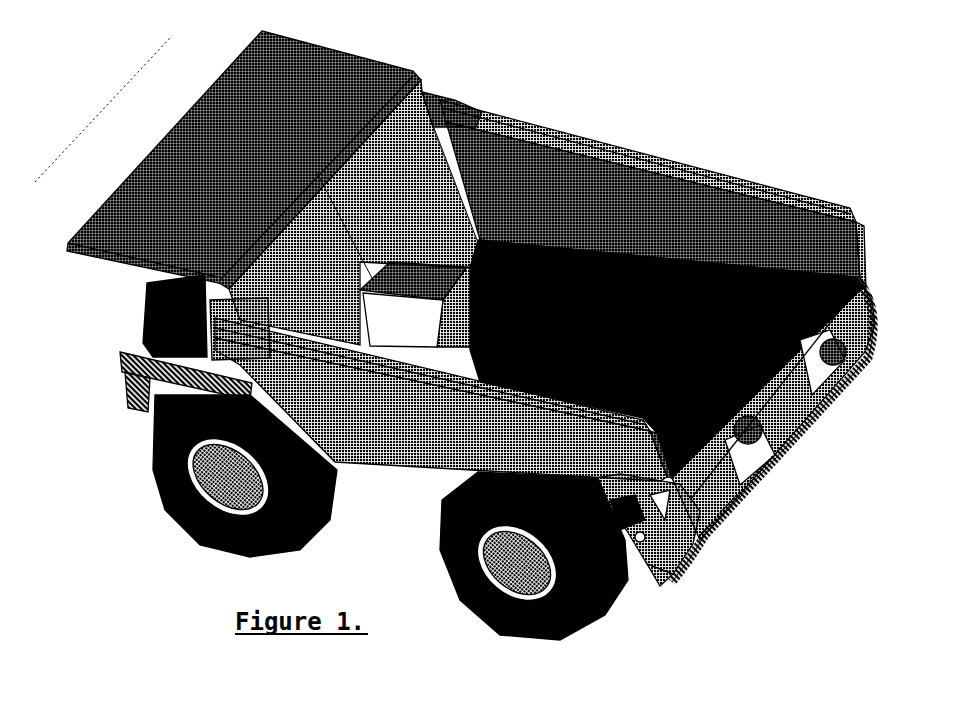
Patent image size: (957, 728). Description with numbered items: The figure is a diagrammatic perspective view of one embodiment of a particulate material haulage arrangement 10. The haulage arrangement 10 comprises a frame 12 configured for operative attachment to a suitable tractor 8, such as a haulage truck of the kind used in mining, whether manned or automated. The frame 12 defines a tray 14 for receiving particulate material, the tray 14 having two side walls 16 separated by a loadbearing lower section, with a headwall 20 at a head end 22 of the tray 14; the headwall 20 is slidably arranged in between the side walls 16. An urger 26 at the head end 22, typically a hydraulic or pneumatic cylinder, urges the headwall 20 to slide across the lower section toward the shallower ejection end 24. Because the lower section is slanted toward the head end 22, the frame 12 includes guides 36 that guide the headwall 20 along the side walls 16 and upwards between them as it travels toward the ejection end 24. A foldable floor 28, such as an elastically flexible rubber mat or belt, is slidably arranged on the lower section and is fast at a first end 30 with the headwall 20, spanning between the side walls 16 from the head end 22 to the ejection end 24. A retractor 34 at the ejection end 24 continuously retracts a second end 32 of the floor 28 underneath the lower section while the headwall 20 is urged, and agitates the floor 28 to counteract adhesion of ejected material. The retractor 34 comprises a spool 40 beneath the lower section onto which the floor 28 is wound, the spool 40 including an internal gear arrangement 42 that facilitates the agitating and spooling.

The tractor 8 is at (147, 362).
The particulate material haulage arrangement 10 is at (85, 88).
The frame 12 is at (437, 477).
The tray 14 is at (317, 427).
The side walls 16 is at (612, 193).
The headwall 20 is at (332, 247).
The head end 22 is at (345, 190).
The ejection end 24 is at (880, 290).
The urger 26 is at (460, 315).
The foldable floor 28 is at (695, 297).
The first end 30 is at (462, 252).
The second end 32 is at (800, 363).
The retractor 34 is at (803, 511).
The guides 36 is at (453, 103).
The spool 40 is at (693, 537).
The internal gear arrangement 42 is at (657, 567).